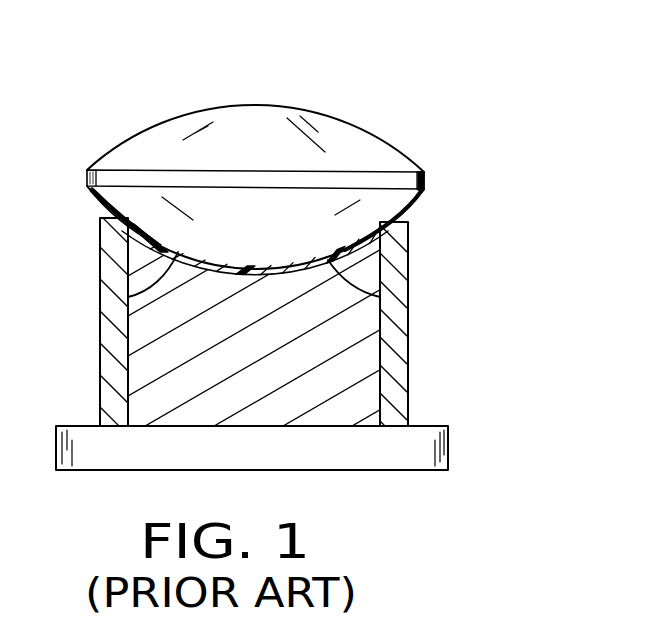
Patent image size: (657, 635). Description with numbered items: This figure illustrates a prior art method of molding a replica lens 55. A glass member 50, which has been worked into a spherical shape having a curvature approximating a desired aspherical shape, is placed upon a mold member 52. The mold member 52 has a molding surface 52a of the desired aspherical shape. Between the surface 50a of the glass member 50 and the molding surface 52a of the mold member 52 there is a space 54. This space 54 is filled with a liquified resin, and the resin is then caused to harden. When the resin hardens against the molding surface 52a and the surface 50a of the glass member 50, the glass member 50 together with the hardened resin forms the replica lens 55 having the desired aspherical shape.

The replica lens 55 is at (262, 101).
The glass member 50 is at (367, 158).
The surface of the glass member 50a is at (130, 297).
The space 54 is at (362, 242).
The molding surface 52a is at (380, 298).
The mold member 52 is at (350, 368).